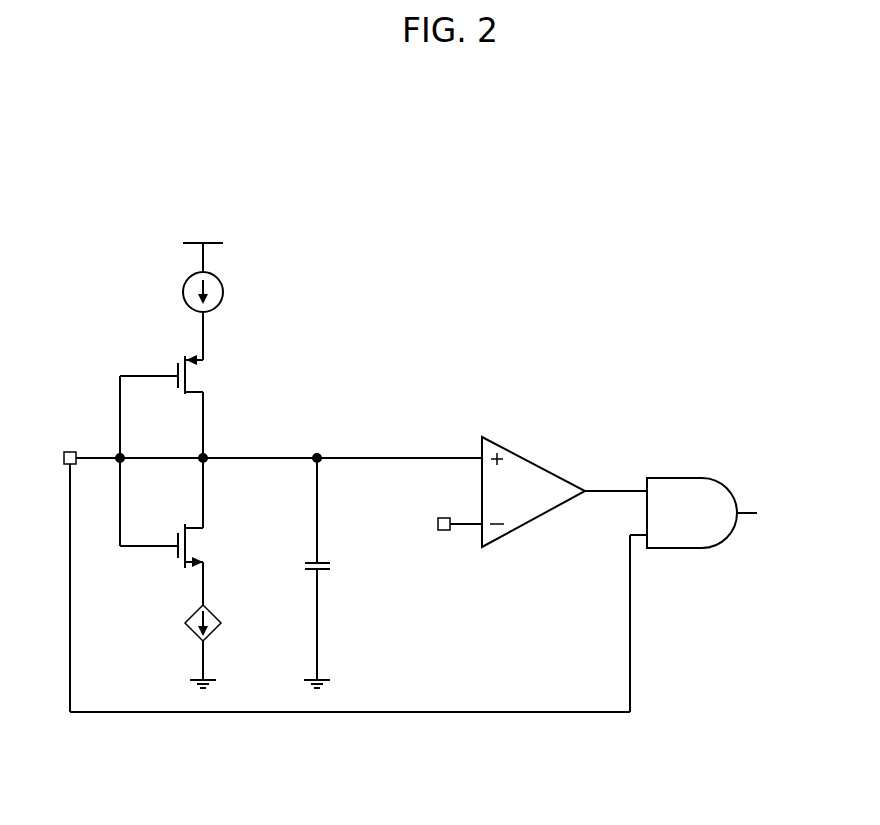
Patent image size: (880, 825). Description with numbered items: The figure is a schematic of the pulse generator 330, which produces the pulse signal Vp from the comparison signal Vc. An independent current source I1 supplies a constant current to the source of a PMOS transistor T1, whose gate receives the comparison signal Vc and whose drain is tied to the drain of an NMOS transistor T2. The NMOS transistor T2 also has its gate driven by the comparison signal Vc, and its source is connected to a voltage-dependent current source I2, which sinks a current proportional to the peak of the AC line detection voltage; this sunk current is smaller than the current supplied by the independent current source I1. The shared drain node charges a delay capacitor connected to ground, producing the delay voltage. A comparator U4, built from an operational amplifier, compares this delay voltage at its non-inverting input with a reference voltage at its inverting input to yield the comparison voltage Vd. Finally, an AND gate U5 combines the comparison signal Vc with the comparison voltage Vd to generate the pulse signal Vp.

The pulse generator 330 is at (351, 217).
The PMOS transistor T1 is at (208, 374).
The NMOS transistor T2 is at (208, 546).
The independent current source I1 is at (213, 292).
The voltage-dependent current source I2 is at (216, 624).
The comparator U4 is at (533, 503).
The AND gate U5 is at (692, 535).